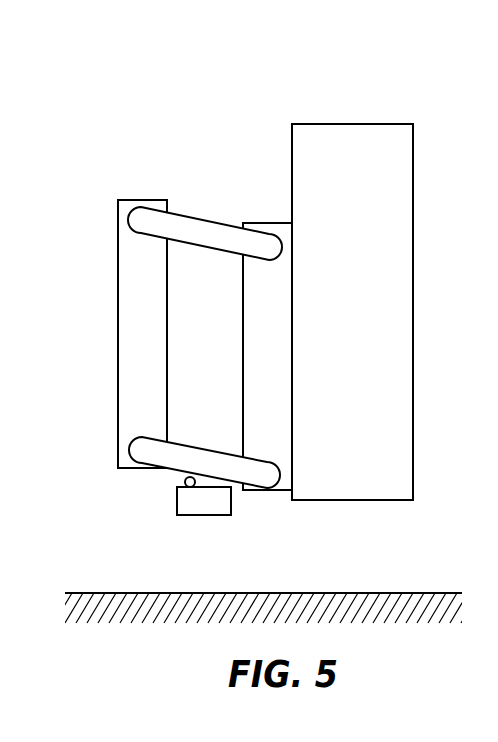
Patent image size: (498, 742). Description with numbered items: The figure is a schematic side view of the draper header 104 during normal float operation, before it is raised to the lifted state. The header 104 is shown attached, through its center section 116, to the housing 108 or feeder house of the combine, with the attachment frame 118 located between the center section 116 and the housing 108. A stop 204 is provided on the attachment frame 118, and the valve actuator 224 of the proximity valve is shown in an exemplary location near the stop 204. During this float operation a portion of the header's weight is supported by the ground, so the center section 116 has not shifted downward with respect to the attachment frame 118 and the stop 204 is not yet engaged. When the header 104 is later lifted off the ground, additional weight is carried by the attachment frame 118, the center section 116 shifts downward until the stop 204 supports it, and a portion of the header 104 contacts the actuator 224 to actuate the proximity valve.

The header 104 is at (128, 134).
The housing 108 is at (368, 342).
The center section 116 is at (118, 340).
The attachment frame 118 is at (270, 222).
The stop 204 is at (205, 515).
The actuator 224 is at (168, 476).